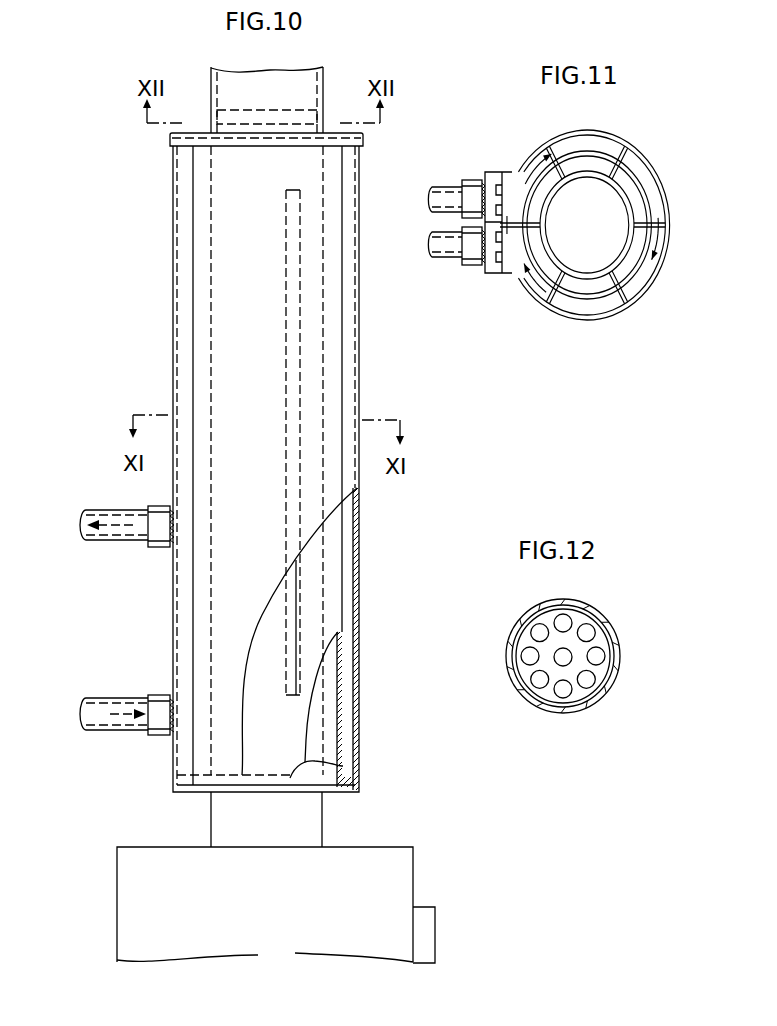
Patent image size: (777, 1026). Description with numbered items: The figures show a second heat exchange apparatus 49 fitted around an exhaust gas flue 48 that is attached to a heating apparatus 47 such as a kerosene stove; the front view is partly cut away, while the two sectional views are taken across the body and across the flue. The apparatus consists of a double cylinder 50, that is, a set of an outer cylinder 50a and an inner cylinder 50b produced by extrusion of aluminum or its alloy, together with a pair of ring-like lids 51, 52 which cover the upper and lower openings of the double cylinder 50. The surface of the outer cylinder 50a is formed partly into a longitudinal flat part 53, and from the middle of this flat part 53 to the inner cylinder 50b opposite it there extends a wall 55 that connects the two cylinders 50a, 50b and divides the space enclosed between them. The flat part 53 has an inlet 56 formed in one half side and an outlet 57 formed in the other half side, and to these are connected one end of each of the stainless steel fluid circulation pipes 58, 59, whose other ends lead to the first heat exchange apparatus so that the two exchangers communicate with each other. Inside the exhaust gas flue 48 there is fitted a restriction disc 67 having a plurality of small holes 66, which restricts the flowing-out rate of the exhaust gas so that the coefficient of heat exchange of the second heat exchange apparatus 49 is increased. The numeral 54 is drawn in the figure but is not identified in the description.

In FIG. 10, the heating apparatus 47 is at (413, 865).
In FIG. 10, the exhaust gas flue 48 is at (323, 92).
In FIG. 11, the exhaust gas flue 48 is at (557, 165).
In FIG. 12, the exhaust gas flue 48 is at (605, 625).
In FIG. 10, the second heat exchange apparatus 49 is at (360, 382).
In FIG. 11, the second heat exchange apparatus 49 is at (655, 282).
In FIG. 10, the double cylinder 50 is at (172, 305).
In FIG. 11, the double cylinder 50 is at (668, 218).
In FIG. 10, the outer cylinder 50a is at (360, 738).
In FIG. 11, the outer cylinder 50a is at (597, 317).
In FIG. 10, the inner cylinder 50b is at (340, 680).
In FIG. 11, the inner cylinder 50b is at (637, 178).
In FIG. 10, the ring-like lid 51 is at (172, 140).
In FIG. 10, the ring-like lid 52 is at (350, 768).
In FIG. 11, the flat part 53 is at (492, 275).
In FIG. 10, the passage tube 54 is at (347, 618).
In FIG. 11, the passage tube 54 is at (565, 303).
In FIG. 11, the wall 55 is at (527, 222).
In FIG. 10, the inlet 56 is at (160, 718).
In FIG. 11, the inlet 56 is at (471, 258).
In FIG. 10, the outlet 57 is at (162, 507).
In FIG. 11, the outlet 57 is at (467, 185).
In FIG. 10, the fluid circulation pipe 58 is at (110, 697).
In FIG. 10, the fluid circulation pipe 59 is at (115, 542).
In FIG. 12, the small holes 66 is at (566, 690).
In FIG. 10, the restriction disc 67 is at (233, 110).
In FIG. 12, the restriction disc 67 is at (600, 667).